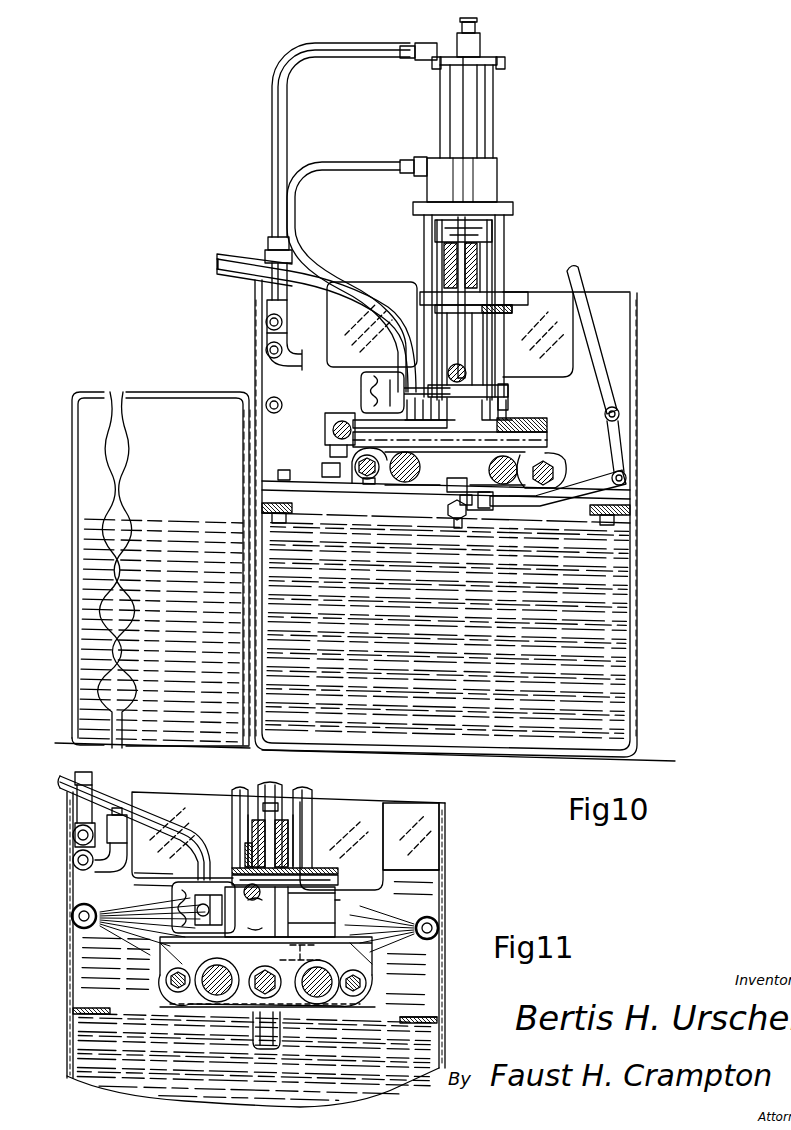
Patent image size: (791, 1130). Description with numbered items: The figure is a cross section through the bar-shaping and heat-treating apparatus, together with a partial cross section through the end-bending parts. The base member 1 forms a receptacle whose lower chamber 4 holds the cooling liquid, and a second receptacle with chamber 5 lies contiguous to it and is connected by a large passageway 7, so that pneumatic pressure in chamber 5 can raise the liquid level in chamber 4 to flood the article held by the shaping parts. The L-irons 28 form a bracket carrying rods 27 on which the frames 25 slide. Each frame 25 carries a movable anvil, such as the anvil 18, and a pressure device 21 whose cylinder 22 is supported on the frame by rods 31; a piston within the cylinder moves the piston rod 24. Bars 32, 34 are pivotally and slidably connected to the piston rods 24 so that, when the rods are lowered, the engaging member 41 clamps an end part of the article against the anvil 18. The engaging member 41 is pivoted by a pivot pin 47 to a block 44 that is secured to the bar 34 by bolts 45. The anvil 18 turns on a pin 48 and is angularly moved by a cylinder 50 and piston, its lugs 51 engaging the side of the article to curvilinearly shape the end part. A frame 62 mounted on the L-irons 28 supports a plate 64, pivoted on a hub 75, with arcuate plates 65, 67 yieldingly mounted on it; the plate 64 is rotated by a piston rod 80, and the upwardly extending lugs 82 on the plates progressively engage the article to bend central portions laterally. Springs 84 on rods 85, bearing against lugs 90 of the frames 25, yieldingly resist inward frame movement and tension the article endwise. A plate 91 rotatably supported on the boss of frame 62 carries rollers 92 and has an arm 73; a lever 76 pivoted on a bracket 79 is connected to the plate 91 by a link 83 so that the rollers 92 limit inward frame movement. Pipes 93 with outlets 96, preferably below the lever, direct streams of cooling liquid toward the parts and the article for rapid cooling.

In FIG. 10, the base member 1 is at (637, 565).
In FIG. 11, the base member 1 is at (447, 893).
In FIG. 10, the lower chamber 4 is at (590, 634).
In FIG. 11, the lower chamber 4 is at (368, 1081).
In FIG. 10, the chamber 5 is at (153, 430).
In FIG. 10, the passageway 7 is at (250, 680).
In FIG. 11, the anvil 18 is at (336, 905).
In FIG. 10, the pressure device 21 is at (455, 201).
In FIG. 10, the cylinder 22 is at (462, 126).
In FIG. 10, the piston rod 24 is at (458, 346).
In FIG. 11, the piston rod 24 is at (279, 793).
In FIG. 11, the frame 25 is at (370, 952).
In FIG. 10, the rod 27 is at (418, 486).
In FIG. 11, the rod 27 is at (222, 964).
In FIG. 10, the L-iron 28 is at (632, 521).
In FIG. 10, the rod 31 is at (517, 232).
In FIG. 11, the rod 31 is at (312, 797).
In FIG. 10, the bar 32 is at (500, 253).
In FIG. 11, the bar 32 is at (290, 846).
In FIG. 10, the bar 34 is at (446, 262).
In FIG. 11, the bar 34 is at (252, 831).
In FIG. 10, the engaging member 41 is at (482, 300).
In FIG. 11, the engaging member 41 is at (247, 866).
In FIG. 10, the block 44 is at (440, 250).
In FIG. 11, the block 44 is at (302, 861).
In FIG. 10, the bolt 45 is at (440, 276).
In FIG. 10, the pivot pin 47 is at (540, 262).
In FIG. 11, the pivot pin 47 is at (300, 839).
In FIG. 11, the pin 48 is at (370, 966).
In FIG. 10, the cylinder 50 is at (372, 395).
In FIG. 11, the cylinder 50 is at (200, 906).
In FIG. 11, the lug 51 is at (338, 880).
In FIG. 10, the frame 62 is at (405, 484).
In FIG. 10, the plate 64 is at (535, 447).
In FIG. 10, the arcuate plate 65 is at (325, 442).
In FIG. 10, the arcuate plate 67 is at (510, 430).
In FIG. 10, the arm 73 is at (468, 493).
In FIG. 10, the hub 75 is at (458, 530).
In FIG. 10, the lever 76 is at (600, 367).
In FIG. 10, the bracket 79 is at (627, 473).
In FIG. 10, the piston rod 80 is at (325, 431).
In FIG. 10, the lug 82 is at (368, 479).
In FIG. 10, the link 83 is at (604, 491).
In FIG. 11, the spring 84 is at (367, 981).
In FIG. 10, the rod 85 is at (367, 481).
In FIG. 11, the rod 85 is at (366, 991).
In FIG. 11, the lug 90 is at (395, 1005).
In FIG. 10, the plate 91 is at (450, 505).
In FIG. 10, the roller 92 is at (466, 506).
In FIG. 10, the pipe 93 is at (266, 398).
In FIG. 11, the pipe 93 is at (440, 927).
In FIG. 10, the outlet 96 is at (283, 393).
In FIG. 11, the outlet 96 is at (104, 913).